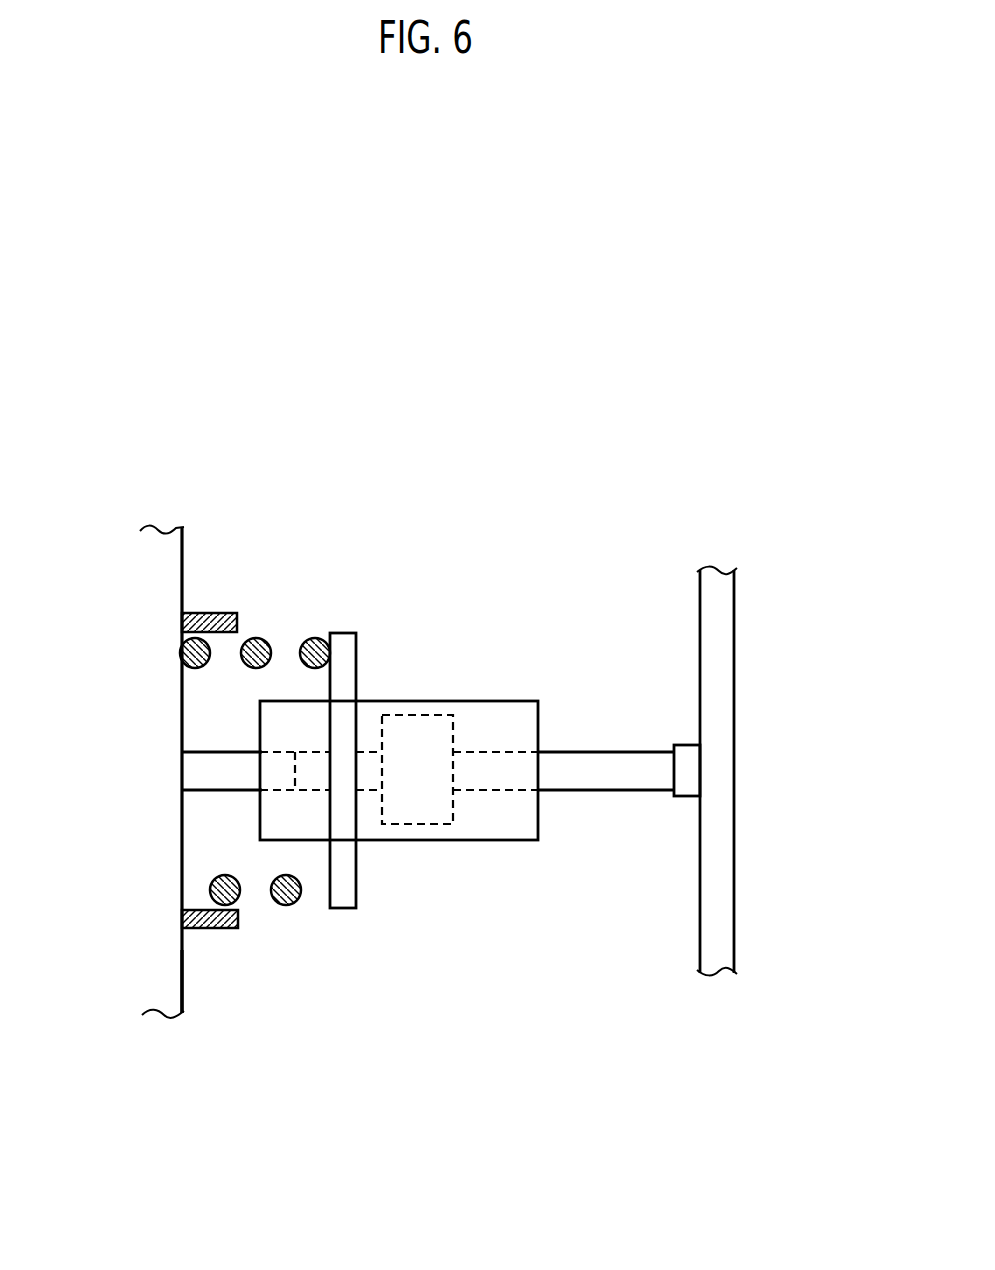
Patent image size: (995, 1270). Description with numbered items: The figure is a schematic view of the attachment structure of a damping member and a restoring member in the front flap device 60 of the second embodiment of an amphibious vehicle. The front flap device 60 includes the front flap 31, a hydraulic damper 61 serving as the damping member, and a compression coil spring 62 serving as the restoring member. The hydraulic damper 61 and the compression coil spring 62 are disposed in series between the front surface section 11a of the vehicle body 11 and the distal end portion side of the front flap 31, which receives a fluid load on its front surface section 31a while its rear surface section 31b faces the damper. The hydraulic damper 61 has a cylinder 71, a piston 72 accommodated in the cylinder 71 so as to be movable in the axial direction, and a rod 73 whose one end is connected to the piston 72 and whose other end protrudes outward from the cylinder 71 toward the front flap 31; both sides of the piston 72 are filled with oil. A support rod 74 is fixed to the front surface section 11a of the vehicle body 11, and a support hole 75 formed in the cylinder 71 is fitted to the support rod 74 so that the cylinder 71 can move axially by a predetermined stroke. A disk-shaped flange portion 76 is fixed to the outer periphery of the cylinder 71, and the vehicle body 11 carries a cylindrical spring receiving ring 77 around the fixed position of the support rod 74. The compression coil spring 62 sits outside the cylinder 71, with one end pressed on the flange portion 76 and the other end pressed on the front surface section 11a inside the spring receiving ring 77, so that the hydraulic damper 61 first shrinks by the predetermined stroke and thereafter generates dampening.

The vehicle body 11 is at (190, 564).
The front surface section 11a is at (184, 978).
The spring receiving ring 77 is at (213, 613).
The compression coil spring 62 is at (258, 645).
The flange portion 76 is at (343, 650).
The hydraulic damper 61 is at (490, 690).
The cylinder 71 is at (493, 823).
The piston 72 is at (412, 807).
The support hole 75 is at (309, 778).
The support rod 74 is at (197, 770).
The rod 73 is at (618, 767).
The front flap device 60 is at (790, 498).
The front flap 31 is at (745, 705).
The front surface section 31a is at (736, 970).
The rear surface section 31b is at (699, 970).